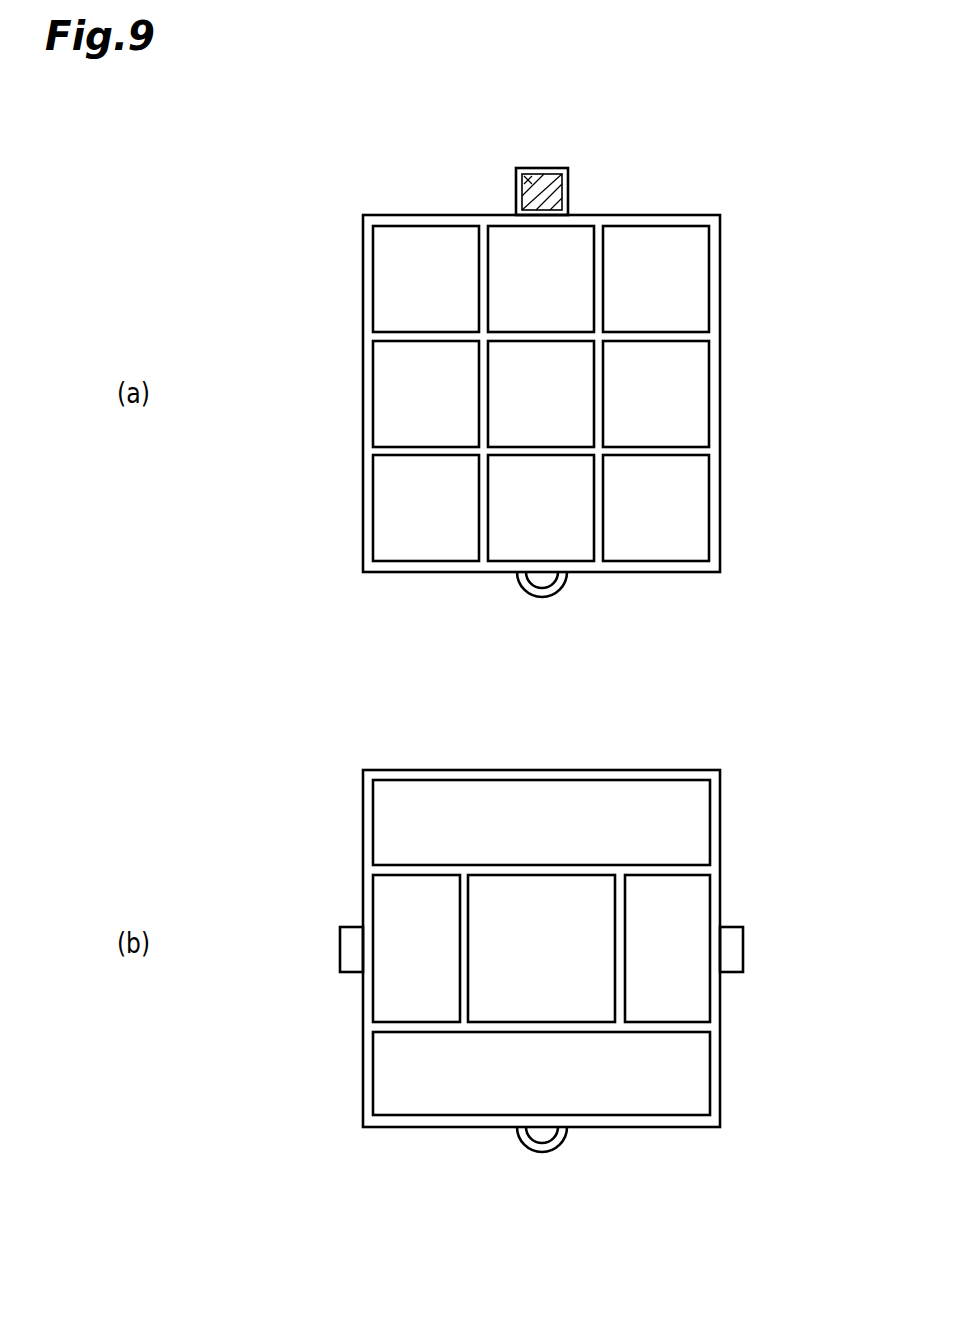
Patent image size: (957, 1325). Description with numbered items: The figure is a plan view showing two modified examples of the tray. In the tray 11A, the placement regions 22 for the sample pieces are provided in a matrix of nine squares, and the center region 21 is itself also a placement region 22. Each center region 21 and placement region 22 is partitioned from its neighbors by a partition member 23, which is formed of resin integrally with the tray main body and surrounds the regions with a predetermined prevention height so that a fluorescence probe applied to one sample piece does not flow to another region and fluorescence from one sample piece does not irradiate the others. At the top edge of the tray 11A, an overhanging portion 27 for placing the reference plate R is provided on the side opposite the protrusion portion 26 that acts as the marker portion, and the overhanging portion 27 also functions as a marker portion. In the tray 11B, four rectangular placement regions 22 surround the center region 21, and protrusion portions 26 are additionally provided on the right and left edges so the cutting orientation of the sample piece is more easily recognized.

The tray 11A is at (308, 224).
The tray 11B is at (308, 791).
The center region 21 is at (540, 917).
The placement region 22 is at (567, 245).
The partition member 23 is at (478, 277).
The protrusion portion 26 is at (560, 592).
The overhanging portion 27 is at (545, 167).
The reference plate R is at (515, 180).